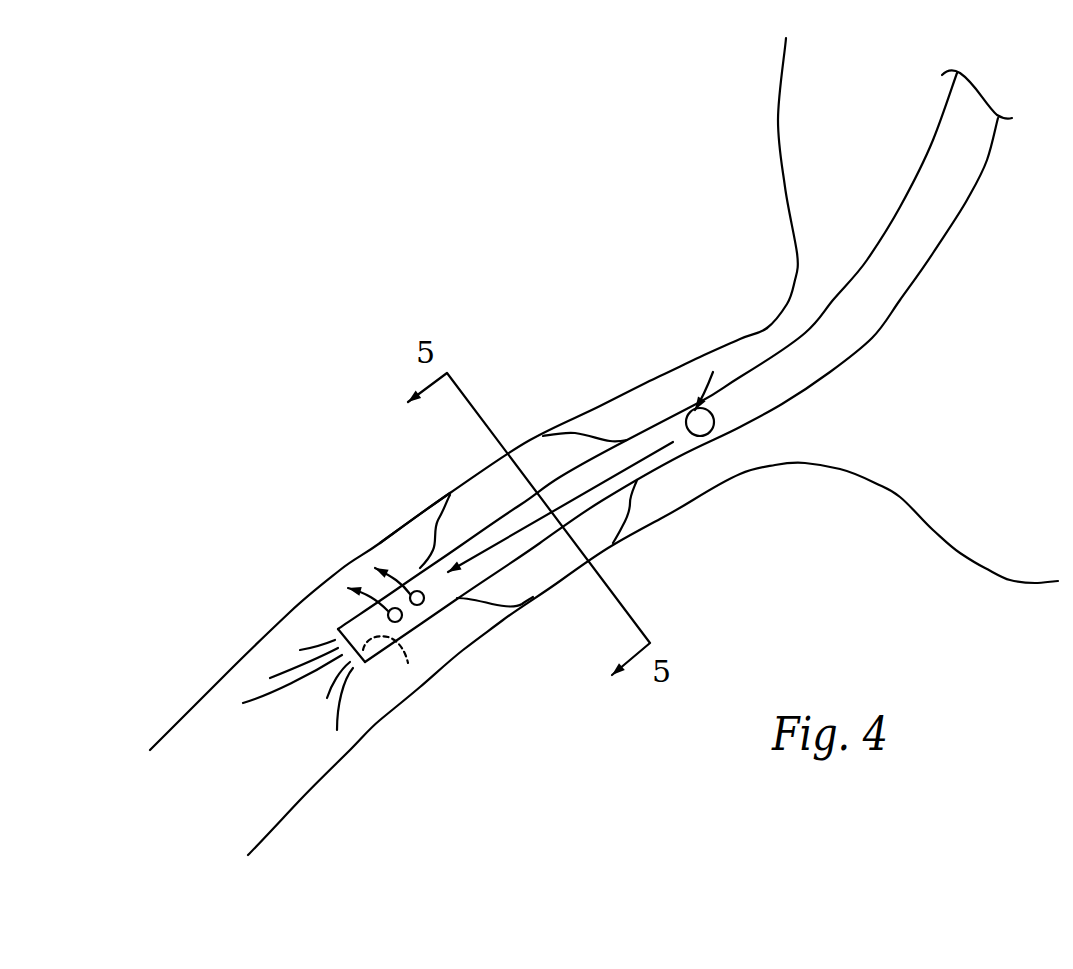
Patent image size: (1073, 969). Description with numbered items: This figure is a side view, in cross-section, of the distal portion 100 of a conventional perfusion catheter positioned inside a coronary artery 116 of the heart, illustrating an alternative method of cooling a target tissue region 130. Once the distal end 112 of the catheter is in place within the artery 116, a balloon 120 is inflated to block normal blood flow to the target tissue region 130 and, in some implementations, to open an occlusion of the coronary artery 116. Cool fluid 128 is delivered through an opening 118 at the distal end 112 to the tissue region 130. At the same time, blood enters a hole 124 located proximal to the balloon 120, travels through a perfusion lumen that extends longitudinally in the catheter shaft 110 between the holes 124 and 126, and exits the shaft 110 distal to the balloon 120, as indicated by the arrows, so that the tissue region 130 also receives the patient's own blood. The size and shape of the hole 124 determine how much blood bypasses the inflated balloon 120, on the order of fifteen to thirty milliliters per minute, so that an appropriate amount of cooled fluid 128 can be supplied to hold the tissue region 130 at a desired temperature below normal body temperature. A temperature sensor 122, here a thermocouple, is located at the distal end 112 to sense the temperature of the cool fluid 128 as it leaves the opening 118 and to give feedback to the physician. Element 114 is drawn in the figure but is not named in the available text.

The distal portion of perfusion catheter 100 is at (807, 317).
The catheter shaft 110 is at (782, 403).
The distal end 112 is at (453, 485).
The branch vessel 114 is at (815, 147).
The coronary artery 116 is at (403, 525).
The opening 118 is at (337, 632).
The balloon 120 is at (575, 433).
The temperature sensor 122 is at (408, 663).
The hole 124 is at (703, 437).
The hole 126 is at (402, 618).
The cool fluid 128 is at (347, 698).
The target tissue region 130 is at (155, 708).